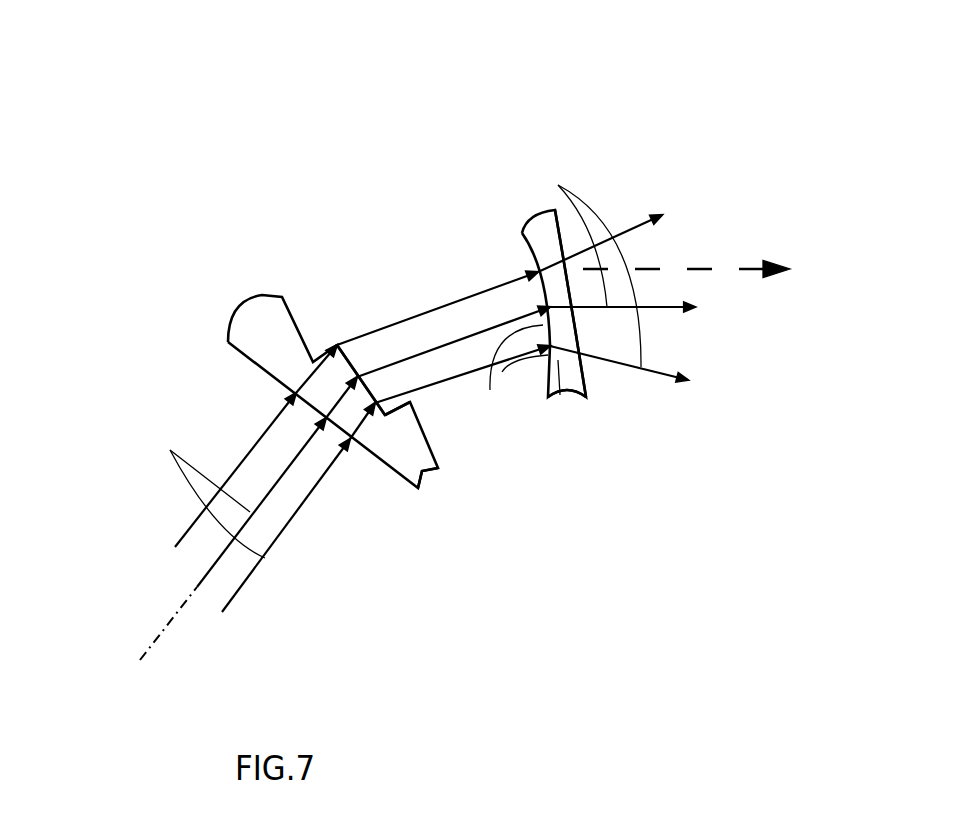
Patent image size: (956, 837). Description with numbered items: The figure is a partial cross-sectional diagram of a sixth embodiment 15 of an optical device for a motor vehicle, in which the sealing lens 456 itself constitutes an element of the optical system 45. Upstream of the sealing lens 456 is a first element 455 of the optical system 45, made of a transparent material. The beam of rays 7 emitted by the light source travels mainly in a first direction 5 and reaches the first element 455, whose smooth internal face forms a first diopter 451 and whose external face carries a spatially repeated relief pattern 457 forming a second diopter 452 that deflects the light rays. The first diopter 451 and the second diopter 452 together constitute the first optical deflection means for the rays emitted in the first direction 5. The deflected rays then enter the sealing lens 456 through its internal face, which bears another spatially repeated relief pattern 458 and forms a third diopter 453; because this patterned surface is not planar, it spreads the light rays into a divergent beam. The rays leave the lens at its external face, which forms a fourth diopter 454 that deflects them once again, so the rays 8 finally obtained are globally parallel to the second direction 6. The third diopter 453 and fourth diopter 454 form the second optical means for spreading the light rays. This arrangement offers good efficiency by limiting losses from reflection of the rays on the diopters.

The optical system 45 is at (443, 153).
The sixth embodiment of the optical device 15 is at (220, 275).
The first diopter 451 is at (373, 460).
The second diopter 452 is at (296, 322).
The third diopter 453 is at (533, 253).
The fourth diopter 454 is at (583, 370).
The first element 455 is at (408, 460).
The sealing lens 456 is at (560, 395).
The relief pattern 457 is at (410, 403).
The relief pattern 458 is at (368, 387).
The first direction 5 is at (173, 612).
The second direction 6 is at (687, 262).
The beam of rays 7 is at (243, 462).
The rays 8 is at (592, 270).